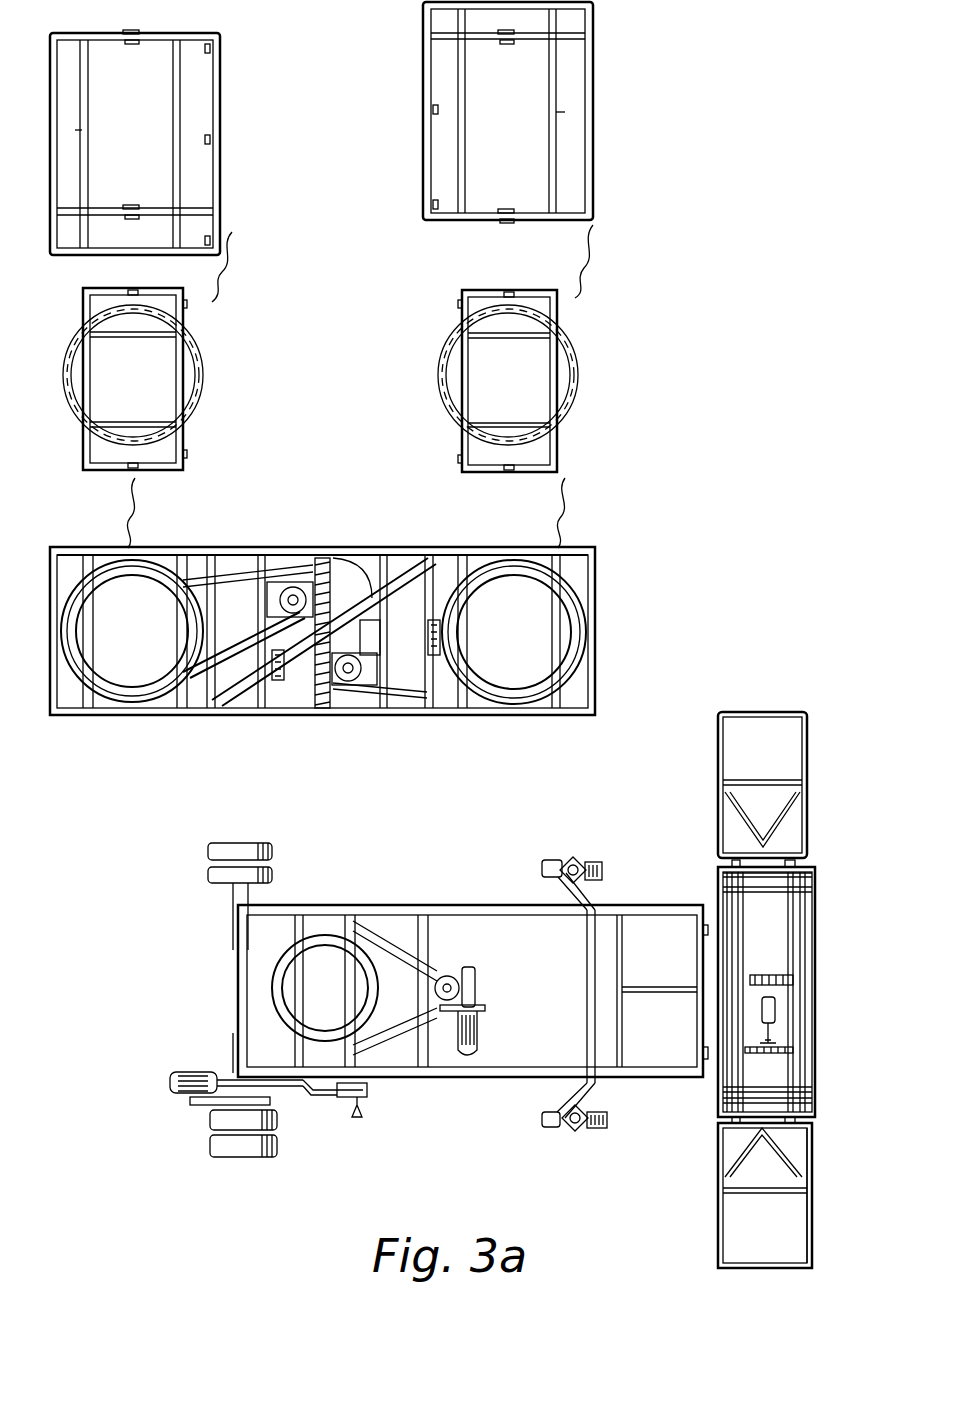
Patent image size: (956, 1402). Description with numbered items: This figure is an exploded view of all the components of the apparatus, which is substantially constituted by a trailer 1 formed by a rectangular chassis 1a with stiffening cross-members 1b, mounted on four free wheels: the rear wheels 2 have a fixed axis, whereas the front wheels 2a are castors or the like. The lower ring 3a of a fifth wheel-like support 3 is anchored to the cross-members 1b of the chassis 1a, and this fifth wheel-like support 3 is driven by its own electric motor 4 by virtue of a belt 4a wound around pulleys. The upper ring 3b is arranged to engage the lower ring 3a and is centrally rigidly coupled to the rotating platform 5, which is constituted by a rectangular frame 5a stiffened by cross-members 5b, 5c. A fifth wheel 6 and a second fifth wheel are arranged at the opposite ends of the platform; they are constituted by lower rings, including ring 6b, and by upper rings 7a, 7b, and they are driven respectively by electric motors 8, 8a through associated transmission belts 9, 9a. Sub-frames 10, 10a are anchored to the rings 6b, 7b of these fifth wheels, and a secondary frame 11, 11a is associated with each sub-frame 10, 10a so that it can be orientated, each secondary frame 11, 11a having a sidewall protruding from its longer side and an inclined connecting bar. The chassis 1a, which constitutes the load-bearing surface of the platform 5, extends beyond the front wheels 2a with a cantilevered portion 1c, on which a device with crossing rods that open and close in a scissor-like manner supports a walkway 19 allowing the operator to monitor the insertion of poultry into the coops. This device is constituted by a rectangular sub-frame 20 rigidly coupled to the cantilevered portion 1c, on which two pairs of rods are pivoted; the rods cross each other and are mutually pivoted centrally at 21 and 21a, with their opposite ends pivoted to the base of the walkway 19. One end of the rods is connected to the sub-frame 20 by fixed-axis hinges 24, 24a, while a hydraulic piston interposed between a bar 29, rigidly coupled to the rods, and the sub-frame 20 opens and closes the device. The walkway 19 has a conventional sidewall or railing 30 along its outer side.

The trailer 1 is at (482, 1103).
The rectangular chassis 1a is at (433, 907).
The stiffening cross-members 1b is at (333, 973).
The cantilevered portion 1c is at (697, 1013).
The rear wheels 2 is at (233, 850).
The front wheels 2a is at (552, 855).
The fifth wheel-like support 3 is at (283, 677).
The lower ring 3a is at (273, 990).
The upper ring 3b is at (367, 593).
The electric motor 4 is at (470, 1033).
The belt 4a is at (392, 1035).
The rotating platform 5 is at (443, 548).
The rectangular frame 5a is at (593, 552).
The cross-member 5b is at (237, 560).
The cross-member 5c is at (368, 597).
The fifth wheel 6 is at (113, 693).
The lower ring 6b is at (72, 405).
The upper ring 7a is at (573, 623).
The upper ring 7b is at (568, 378).
The electric motor 8 is at (197, 687).
The electric motor 8a is at (380, 637).
The transmission belt 9 is at (215, 593).
The transmission belt 9a is at (440, 707).
The sub-frame 10 is at (187, 436).
The sub-frame 10a is at (557, 447).
The secondary frame 11 is at (230, 155).
The secondary frame 11a is at (602, 155).
The walkway 19 is at (758, 990).
The rectangular sub-frame 20 is at (727, 1150).
The central pivot 21 is at (760, 985).
The central pivot 21a is at (778, 1018).
The hinge 24 is at (723, 1093).
The hinge 24a is at (813, 1093).
The bar 29 is at (778, 1040).
The sidewall or railing 30 is at (815, 957).